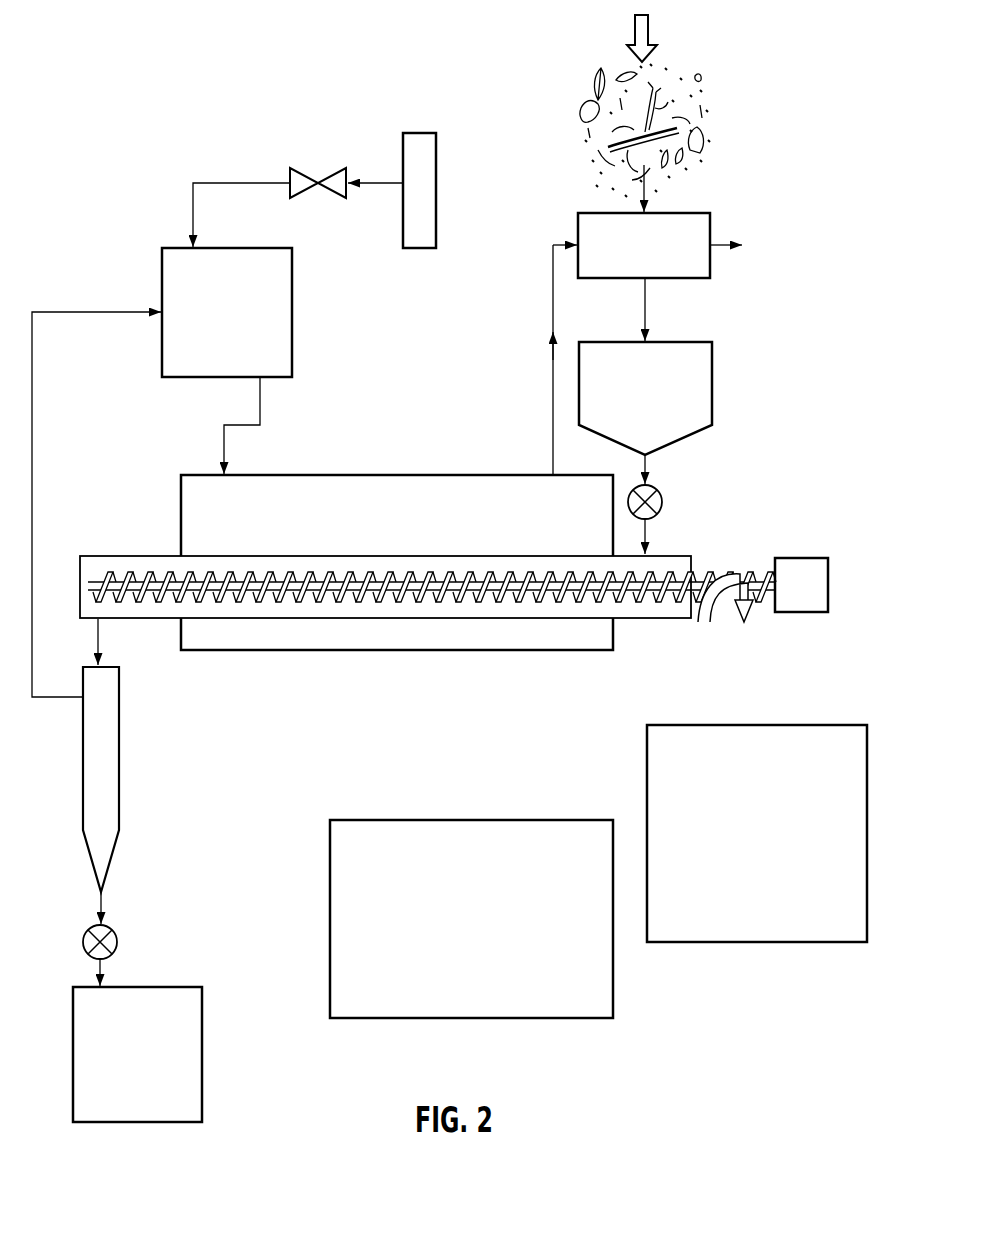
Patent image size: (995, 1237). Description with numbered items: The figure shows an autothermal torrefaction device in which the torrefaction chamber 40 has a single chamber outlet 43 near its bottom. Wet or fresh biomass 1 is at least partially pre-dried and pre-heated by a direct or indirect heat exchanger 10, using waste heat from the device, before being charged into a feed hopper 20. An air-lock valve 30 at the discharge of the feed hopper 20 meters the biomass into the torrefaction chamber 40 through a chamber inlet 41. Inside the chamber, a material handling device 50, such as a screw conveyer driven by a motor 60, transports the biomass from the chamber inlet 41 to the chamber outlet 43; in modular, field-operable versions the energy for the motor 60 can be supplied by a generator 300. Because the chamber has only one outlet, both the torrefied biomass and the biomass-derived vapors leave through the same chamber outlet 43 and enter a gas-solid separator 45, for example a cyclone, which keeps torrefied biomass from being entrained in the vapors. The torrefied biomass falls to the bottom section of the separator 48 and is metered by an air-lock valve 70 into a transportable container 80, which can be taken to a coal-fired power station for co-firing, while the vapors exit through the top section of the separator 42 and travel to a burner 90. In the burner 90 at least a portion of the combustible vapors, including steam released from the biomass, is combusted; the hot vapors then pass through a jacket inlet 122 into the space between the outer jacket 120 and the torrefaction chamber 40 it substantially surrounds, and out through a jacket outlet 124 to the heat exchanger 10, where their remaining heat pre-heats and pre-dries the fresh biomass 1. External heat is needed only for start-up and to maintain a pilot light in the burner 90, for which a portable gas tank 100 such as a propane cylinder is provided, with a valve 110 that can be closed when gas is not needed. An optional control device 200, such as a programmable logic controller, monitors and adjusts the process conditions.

The biomass 1 is at (735, 120).
The heat exchanger 10 is at (700, 210).
The feed hopper 20 is at (715, 356).
The air-lock valve 30 is at (665, 500).
The torrefaction chamber 40 is at (650, 621).
The chamber inlet 41 is at (650, 550).
The top section of the separator 42 is at (80, 699).
The chamber outlet 43 is at (104, 623).
The gas-solid separator 45 is at (121, 770).
The bottom section of the separator 48 is at (94, 889).
The material handling device 50 is at (500, 604).
The motor 60 is at (800, 614).
The air-lock valve 70 is at (119, 948).
The transportable container 80 is at (204, 1038).
The burner 90 is at (294, 330).
The portable gas tank 100 is at (428, 251).
The valve 110 is at (318, 166).
The outer jacket 120 is at (430, 472).
The jacket inlet 122 is at (252, 462).
The jacket outlet 124 is at (542, 470).
The control device 200 is at (770, 846).
The generator 300 is at (487, 931).